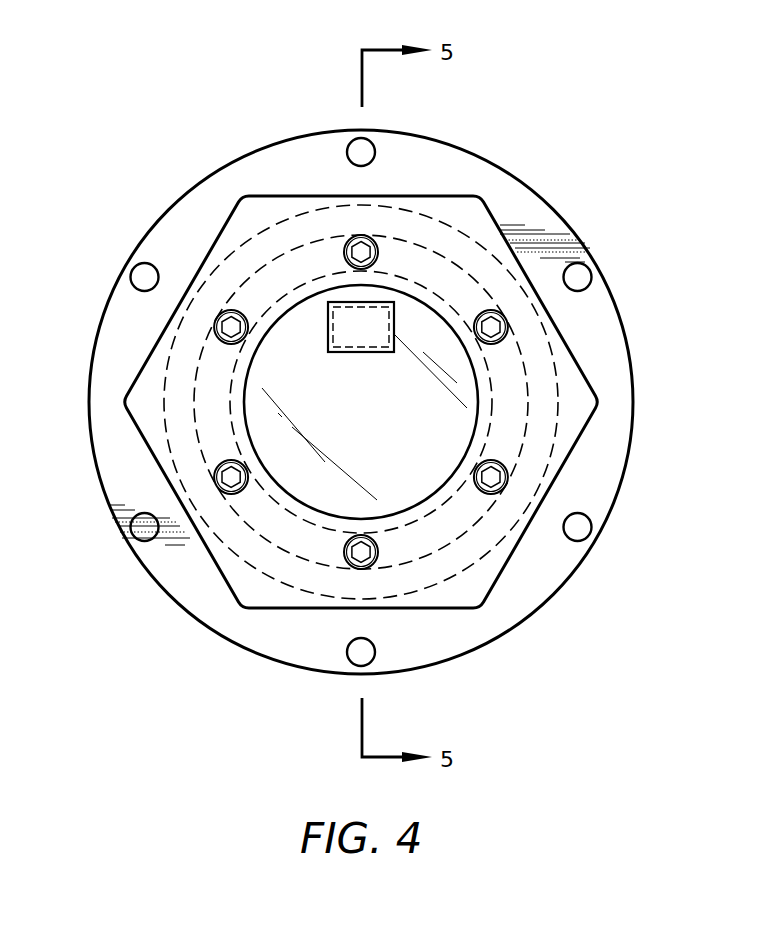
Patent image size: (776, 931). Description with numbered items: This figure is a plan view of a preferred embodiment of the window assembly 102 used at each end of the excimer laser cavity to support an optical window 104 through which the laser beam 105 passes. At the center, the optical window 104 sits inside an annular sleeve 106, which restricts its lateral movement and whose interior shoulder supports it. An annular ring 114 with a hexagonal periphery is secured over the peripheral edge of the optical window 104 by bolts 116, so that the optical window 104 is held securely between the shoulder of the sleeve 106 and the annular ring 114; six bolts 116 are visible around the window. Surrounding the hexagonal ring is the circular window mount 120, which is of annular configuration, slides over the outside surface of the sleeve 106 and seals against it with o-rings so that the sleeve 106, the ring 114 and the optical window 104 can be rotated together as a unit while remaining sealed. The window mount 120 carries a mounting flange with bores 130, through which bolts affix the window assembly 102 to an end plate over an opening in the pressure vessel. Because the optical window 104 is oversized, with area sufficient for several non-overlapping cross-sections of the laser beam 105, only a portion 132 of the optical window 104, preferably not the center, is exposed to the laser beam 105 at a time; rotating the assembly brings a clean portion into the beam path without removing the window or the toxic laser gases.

The window assembly 102 is at (408, 397).
The optical window 104 is at (403, 477).
The laser beam 105 is at (328, 322).
The annular sleeve 106 is at (510, 378).
The annular ring 114 is at (220, 577).
The bolts 116 is at (357, 567).
The window mount 120 is at (513, 173).
The bores 130 is at (138, 275).
The portion of the optical component 132 is at (402, 327).